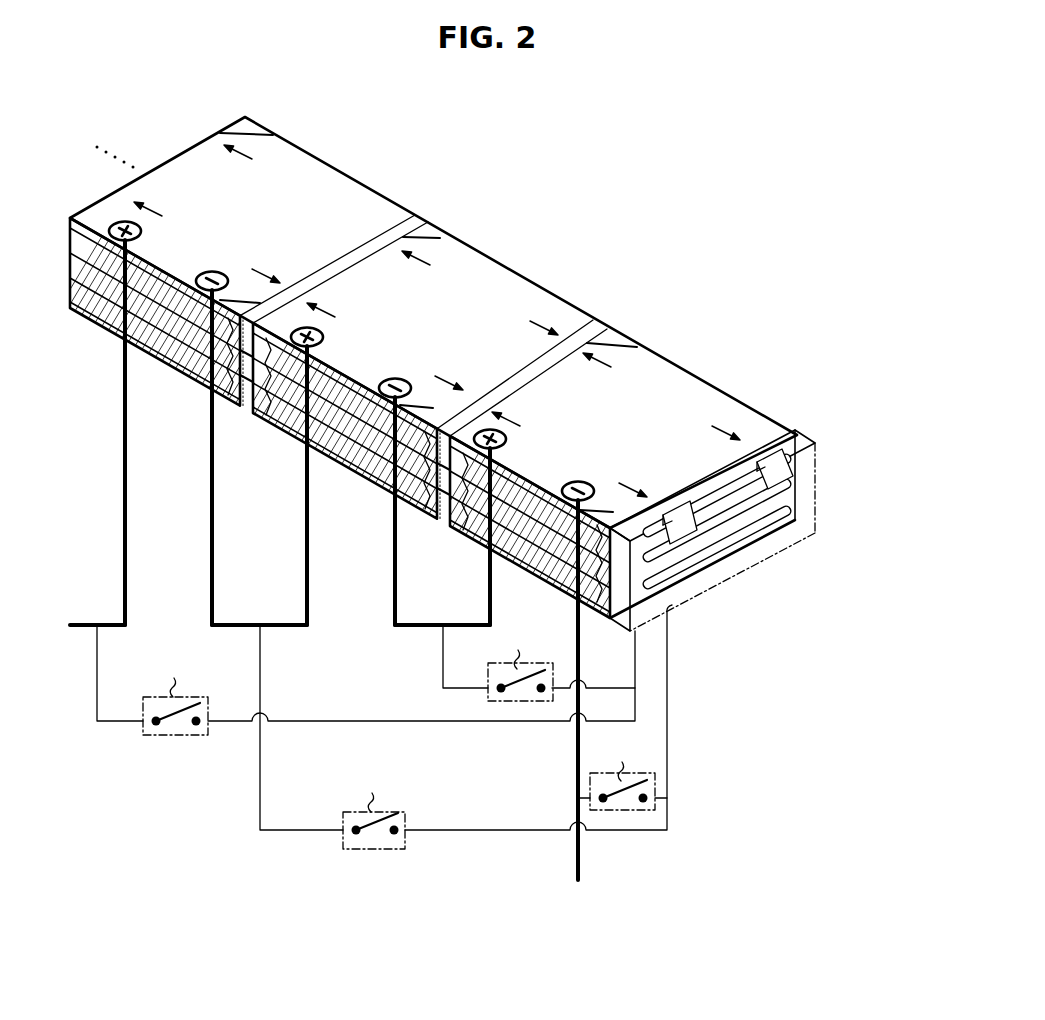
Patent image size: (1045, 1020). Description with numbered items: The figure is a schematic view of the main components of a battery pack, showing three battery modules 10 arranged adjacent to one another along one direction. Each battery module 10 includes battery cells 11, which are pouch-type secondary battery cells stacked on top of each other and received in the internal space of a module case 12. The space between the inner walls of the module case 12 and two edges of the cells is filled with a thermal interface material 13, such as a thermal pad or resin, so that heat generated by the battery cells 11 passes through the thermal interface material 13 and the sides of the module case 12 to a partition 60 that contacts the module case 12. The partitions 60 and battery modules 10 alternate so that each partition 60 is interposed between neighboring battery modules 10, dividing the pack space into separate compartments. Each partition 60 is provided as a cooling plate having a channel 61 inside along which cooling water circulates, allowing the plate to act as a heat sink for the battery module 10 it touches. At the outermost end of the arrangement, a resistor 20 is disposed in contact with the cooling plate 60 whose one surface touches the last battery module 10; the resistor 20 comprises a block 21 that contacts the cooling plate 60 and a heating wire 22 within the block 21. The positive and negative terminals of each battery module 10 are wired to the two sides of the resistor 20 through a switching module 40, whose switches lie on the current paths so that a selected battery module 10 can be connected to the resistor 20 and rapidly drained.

The battery module 10 is at (322, 155).
The battery cells 11 is at (343, 458).
The module case 12 is at (544, 300).
The thermal interface material 13 is at (257, 406).
The resistor 20 is at (760, 526).
The block 21 is at (803, 441).
The heating wire 22 is at (753, 516).
The switching module 40 is at (191, 799).
The partition 60 is at (414, 222).
The channel 61 is at (429, 506).